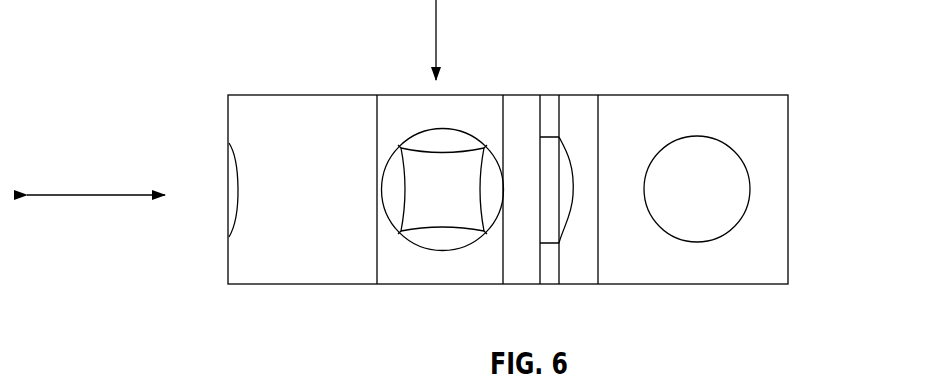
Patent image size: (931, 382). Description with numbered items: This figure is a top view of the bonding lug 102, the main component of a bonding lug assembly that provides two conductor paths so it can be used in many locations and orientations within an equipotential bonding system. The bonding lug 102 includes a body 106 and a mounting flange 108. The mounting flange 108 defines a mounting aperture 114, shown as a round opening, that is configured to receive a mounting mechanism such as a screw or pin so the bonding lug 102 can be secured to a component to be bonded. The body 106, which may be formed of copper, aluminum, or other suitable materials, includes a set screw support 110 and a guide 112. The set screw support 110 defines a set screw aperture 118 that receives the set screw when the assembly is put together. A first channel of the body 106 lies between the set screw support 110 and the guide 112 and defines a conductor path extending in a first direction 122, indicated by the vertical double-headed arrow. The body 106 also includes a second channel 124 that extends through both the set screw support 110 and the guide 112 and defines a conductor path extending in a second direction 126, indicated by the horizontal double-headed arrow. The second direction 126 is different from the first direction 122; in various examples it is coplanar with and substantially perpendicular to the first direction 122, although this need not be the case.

The bonding lug 102 is at (146, 131).
The body 106 is at (255, 250).
The mounting flange 108 is at (722, 268).
The set screw support 110 is at (245, 125).
The guide 112 is at (562, 112).
The mounting aperture 114 is at (700, 153).
The set screw aperture 118 is at (424, 171).
The first direction 122 is at (438, 28).
The second channel 124 is at (561, 187).
The second direction 126 is at (103, 193).